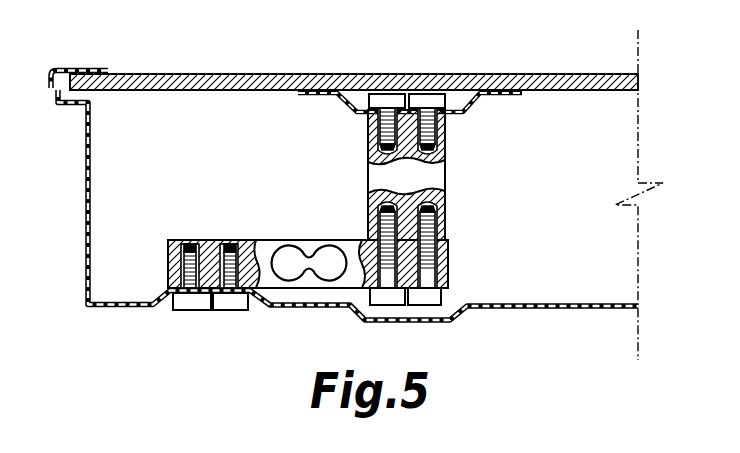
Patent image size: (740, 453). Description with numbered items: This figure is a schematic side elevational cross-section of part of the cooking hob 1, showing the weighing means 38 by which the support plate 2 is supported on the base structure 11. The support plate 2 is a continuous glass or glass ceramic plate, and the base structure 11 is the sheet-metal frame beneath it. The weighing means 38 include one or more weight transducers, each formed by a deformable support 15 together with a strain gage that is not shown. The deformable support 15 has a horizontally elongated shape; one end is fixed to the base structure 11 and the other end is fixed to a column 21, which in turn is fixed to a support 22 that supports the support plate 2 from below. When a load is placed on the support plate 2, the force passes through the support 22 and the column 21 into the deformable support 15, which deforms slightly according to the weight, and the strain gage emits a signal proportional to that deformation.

The cooking hob 1 is at (357, 188).
The support plate 2 is at (243, 74).
The base structure 11 is at (125, 308).
The deformable support 15 is at (307, 236).
The column 21 is at (443, 177).
The support 22 is at (353, 103).
The weighing means 38 is at (231, 204).